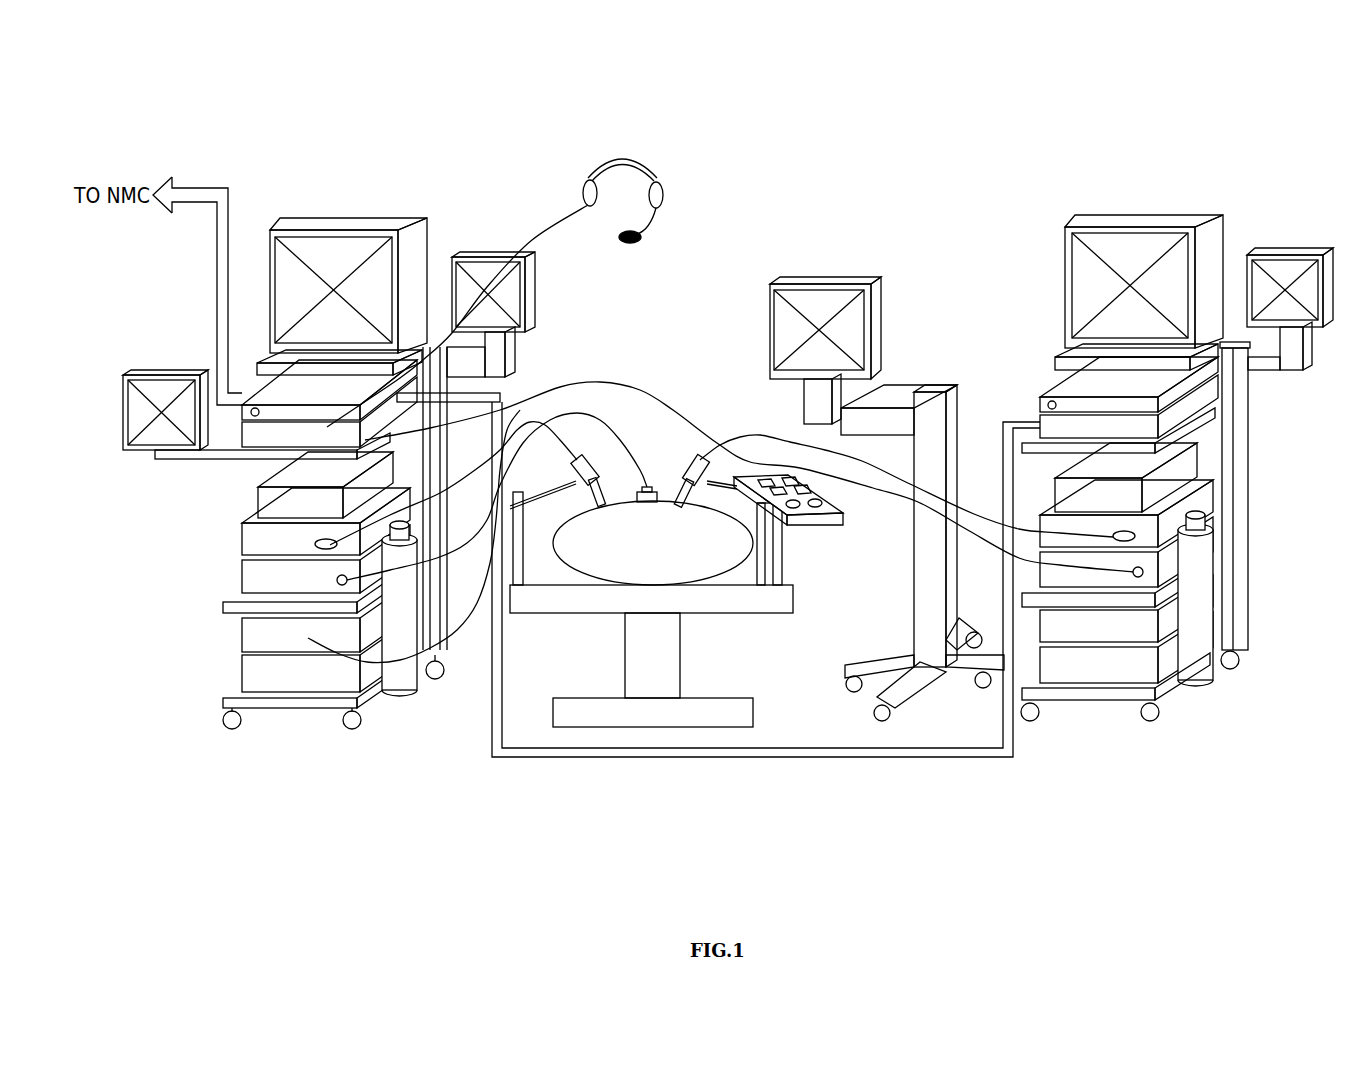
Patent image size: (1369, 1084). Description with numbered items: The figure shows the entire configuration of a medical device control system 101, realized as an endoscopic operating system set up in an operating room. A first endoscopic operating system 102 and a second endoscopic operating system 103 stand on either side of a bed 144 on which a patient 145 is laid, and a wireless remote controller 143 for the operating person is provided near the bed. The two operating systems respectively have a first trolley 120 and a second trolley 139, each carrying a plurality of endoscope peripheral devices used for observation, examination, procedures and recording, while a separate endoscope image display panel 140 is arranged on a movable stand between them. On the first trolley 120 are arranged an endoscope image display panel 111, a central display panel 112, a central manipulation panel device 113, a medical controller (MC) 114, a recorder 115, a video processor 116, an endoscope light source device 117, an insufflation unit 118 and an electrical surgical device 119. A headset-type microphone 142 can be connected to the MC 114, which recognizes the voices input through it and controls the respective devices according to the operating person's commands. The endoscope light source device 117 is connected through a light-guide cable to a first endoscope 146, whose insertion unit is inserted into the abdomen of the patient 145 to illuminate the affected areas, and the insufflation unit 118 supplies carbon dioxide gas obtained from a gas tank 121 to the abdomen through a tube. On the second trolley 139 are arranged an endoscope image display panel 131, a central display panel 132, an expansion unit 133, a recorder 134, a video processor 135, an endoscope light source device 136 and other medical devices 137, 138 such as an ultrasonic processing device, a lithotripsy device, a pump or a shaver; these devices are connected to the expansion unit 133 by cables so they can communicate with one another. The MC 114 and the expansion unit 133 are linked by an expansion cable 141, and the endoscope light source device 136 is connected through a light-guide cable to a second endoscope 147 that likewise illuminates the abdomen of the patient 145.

The medical device control system 101 is at (868, 118).
The first endoscopic operating system 102 is at (360, 178).
The second endoscopic operating system 103 is at (1135, 165).
The endoscope image display panel 111 is at (393, 218).
The central display panel 112 is at (533, 300).
The central manipulation panel device 113 is at (160, 382).
The medical controller (MC) 114 is at (273, 440).
The recorder 115 is at (273, 512).
The video processor 116 is at (273, 548).
The endoscope light source device 117 is at (273, 582).
The insufflation unit 118 is at (273, 645).
The electrical surgical device 119 is at (273, 677).
The first trolley 120 is at (247, 703).
The gas tank 121 is at (402, 663).
The endoscope image display panel 131 is at (1067, 253).
The central display panel 132 is at (1315, 248).
The expansion unit 133 is at (1175, 410).
The recorder 134 is at (1182, 465).
The video processor 135 is at (1148, 540).
The endoscope light source device 136 is at (1148, 583).
The other medical device 137 is at (1165, 623).
The other medical device 138 is at (1137, 668).
The second trolley 139 is at (1137, 705).
The endoscope image display panel 140 is at (843, 335).
The expansion cable 141 is at (1023, 423).
The headset-type microphone 142 is at (658, 202).
The wireless remote controller 143 is at (817, 517).
The bed 144 is at (769, 600).
The patient 145 is at (677, 522).
The first endoscope 146 is at (585, 503).
The second endoscope 147 is at (680, 505).